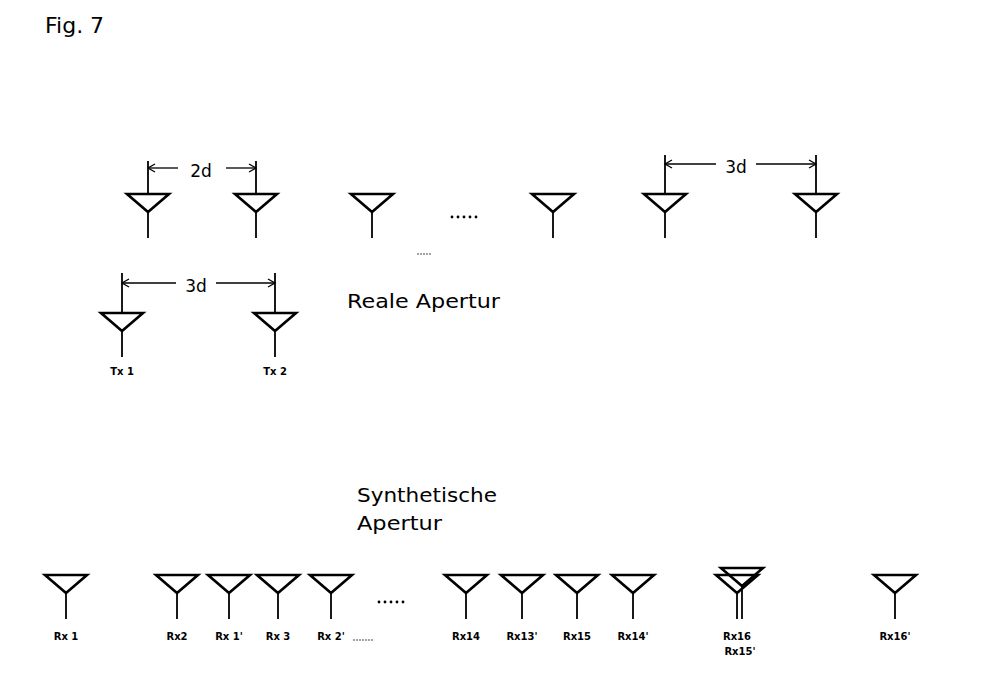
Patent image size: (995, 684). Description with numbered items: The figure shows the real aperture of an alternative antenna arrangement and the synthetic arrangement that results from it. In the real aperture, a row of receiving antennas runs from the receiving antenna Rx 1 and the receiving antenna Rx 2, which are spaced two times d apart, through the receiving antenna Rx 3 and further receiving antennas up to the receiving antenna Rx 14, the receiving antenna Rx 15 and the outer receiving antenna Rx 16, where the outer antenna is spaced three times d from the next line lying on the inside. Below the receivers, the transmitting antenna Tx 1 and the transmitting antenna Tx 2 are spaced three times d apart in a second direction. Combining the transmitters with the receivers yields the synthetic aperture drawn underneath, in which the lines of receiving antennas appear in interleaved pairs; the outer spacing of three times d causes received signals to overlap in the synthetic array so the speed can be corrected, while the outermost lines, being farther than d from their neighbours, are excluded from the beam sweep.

The antenna Rx 1 / Tx 1 is at (148, 209).
The antenna Rx 2 / Tx 2 is at (256, 209).
The receiving antenna Rx 3 is at (372, 225).
The receiving antenna Rx 14 is at (553, 225).
The receiving antenna Rx 15 is at (665, 206).
The receiving antenna Rx 16 is at (816, 206).